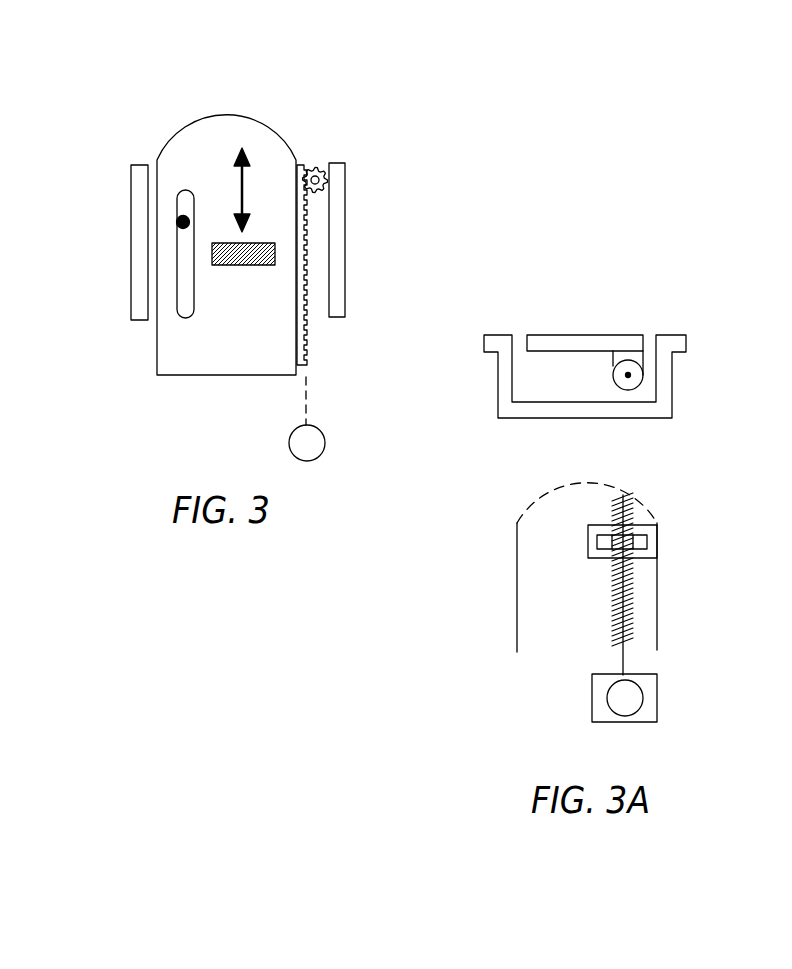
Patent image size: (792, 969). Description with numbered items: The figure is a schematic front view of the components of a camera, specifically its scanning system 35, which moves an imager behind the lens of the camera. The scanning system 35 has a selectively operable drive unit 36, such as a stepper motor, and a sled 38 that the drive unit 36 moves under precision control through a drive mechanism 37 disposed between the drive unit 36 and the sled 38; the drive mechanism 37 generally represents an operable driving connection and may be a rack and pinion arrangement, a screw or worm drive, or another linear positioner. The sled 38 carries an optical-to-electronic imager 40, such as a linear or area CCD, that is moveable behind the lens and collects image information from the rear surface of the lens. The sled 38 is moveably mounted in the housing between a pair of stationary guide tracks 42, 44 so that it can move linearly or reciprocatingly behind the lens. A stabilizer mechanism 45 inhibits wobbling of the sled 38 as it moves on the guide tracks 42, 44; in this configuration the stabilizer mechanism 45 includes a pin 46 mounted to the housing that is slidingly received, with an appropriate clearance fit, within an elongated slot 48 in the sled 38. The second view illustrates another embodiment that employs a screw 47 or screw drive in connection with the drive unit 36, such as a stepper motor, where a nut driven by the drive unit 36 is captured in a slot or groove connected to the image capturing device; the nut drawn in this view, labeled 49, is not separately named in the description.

In FIG. 3, the scanning system 35 is at (138, 99).
In FIG. 3, the drive unit 36 is at (325, 443).
In FIG. 3A, the drive unit 36 is at (643, 690).
In FIG. 3, the drive mechanism 37 is at (320, 325).
In FIG. 3, the sled 38 is at (253, 127).
In FIG. 3, the optical-to-electronic imager 40 is at (247, 268).
In FIG. 3, the guide track 42 is at (137, 222).
In FIG. 3, the guide track 44 is at (338, 220).
In FIG. 3, the stabilizer mechanism 45 is at (203, 203).
In FIG. 3, the pin 46 is at (183, 215).
In FIG. 3A, the screw 47 is at (630, 590).
In FIG. 3, the elongated slot 48 is at (194, 288).
In FIG. 3A, the nut 49 is at (647, 540).